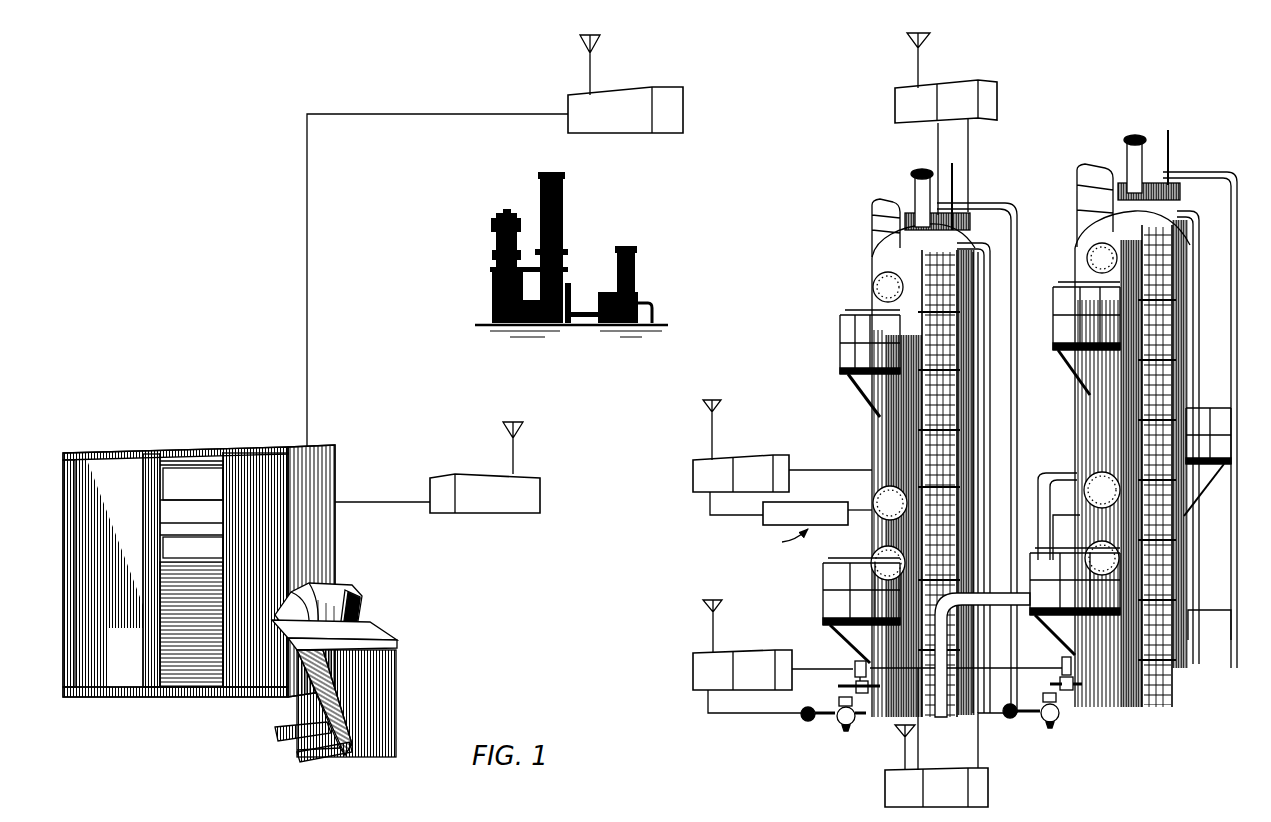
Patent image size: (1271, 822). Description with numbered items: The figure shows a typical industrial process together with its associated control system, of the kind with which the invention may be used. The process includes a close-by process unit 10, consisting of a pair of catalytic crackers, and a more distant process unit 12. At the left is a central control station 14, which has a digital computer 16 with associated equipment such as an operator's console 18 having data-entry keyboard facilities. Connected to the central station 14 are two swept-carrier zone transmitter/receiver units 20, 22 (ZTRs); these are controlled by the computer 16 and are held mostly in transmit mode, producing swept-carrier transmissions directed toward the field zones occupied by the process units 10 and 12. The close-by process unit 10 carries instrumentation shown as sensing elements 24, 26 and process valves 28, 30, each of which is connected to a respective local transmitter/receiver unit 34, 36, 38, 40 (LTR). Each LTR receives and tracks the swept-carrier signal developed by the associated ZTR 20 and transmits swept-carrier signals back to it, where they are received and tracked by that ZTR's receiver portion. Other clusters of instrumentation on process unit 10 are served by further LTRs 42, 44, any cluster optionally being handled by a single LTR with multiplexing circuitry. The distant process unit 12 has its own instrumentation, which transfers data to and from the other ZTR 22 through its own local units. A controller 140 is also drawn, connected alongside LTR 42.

The close-by process unit 10 is at (1154, 135).
The distant process unit 12 is at (573, 236).
The central control station 14 is at (168, 422).
The digital computer 16 is at (187, 473).
The operator's console 18 is at (374, 619).
The zone transmitter/receiver unit 20 is at (515, 513).
The zone transmitter/receiver unit 22 is at (682, 90).
The sensing element 24 is at (853, 660).
The sensing element 26 is at (1068, 692).
The process valve 28 is at (842, 723).
The process valve 30 is at (1037, 720).
The local transmitter/receiver unit 34 is at (765, 688).
The local transmitter/receiver unit 36 is at (885, 788).
The local transmitter/receiver unit 38 is at (693, 670).
The local transmitter/receiver unit 40 is at (970, 792).
The local transmitter/receiver unit 42 is at (702, 454).
The local transmitter/receiver unit 44 is at (909, 87).
The controller 140 is at (823, 527).